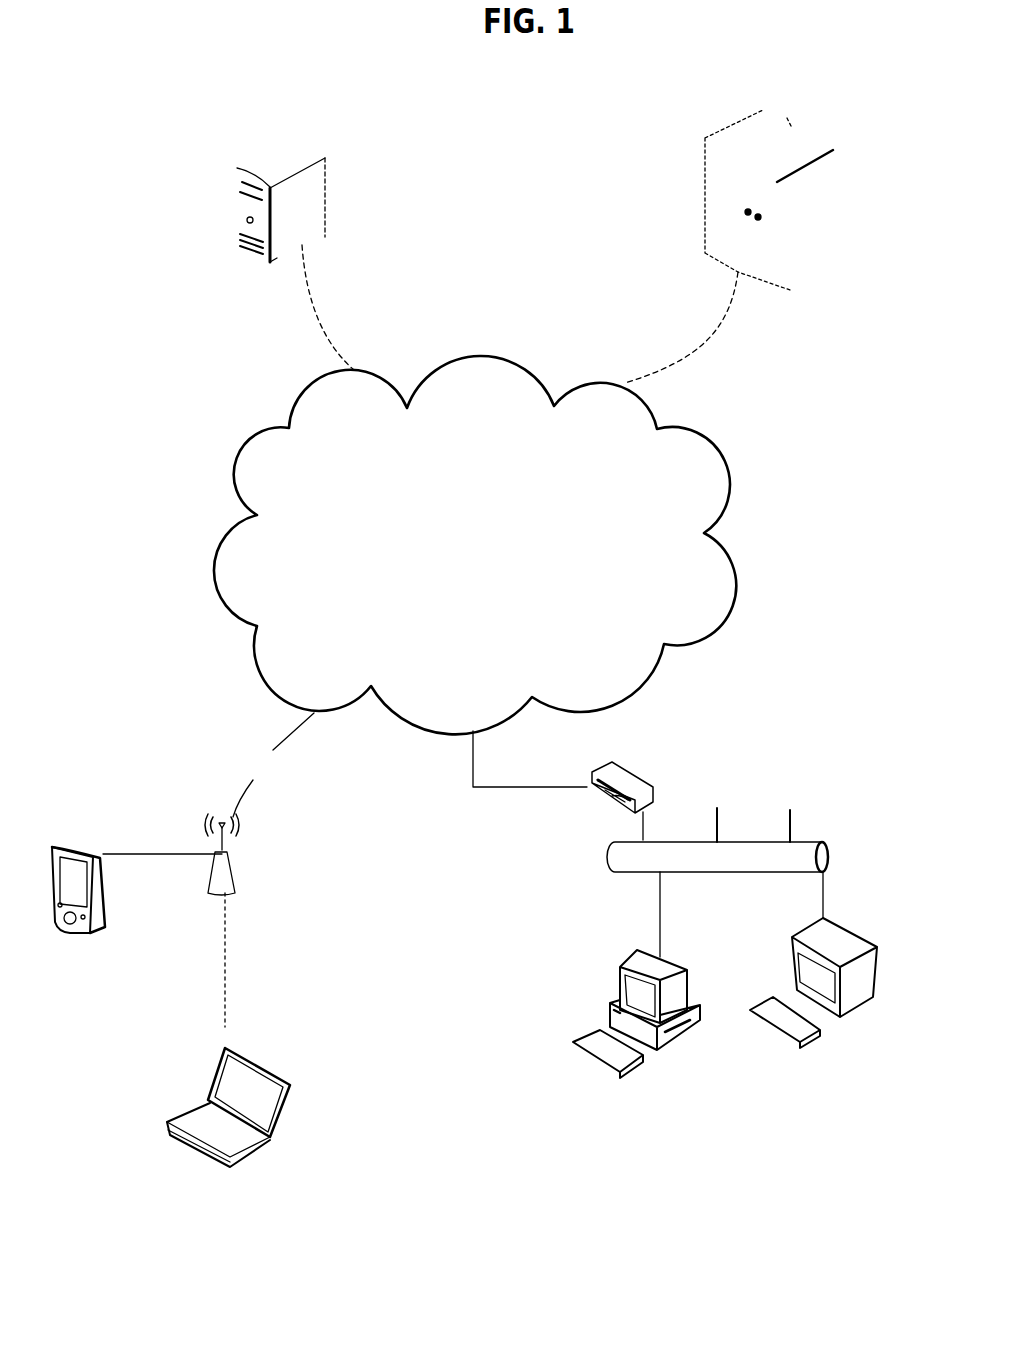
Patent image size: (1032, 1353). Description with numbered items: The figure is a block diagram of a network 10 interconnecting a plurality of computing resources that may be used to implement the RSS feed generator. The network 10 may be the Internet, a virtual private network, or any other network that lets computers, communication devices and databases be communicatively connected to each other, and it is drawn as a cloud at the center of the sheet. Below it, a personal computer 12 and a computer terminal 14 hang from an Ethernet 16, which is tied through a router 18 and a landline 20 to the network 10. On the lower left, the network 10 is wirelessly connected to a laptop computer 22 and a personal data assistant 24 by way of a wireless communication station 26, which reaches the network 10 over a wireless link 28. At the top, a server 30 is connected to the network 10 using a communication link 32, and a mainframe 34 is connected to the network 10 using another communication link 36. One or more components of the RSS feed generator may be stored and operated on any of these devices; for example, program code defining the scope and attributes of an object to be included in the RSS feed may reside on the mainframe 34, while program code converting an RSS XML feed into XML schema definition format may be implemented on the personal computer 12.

The network 10 is at (475, 545).
The personal computer 12 is at (627, 958).
The computer terminal 14 is at (857, 937).
The Ethernet 16 is at (717, 840).
The router 18 is at (653, 785).
The landline 20 is at (523, 788).
The laptop computer 22 is at (273, 1142).
The personal data assistant 24 is at (83, 850).
The wireless communication station 26 is at (233, 875).
The wireless link 28 is at (273, 765).
The server 30 is at (325, 195).
The communication link 32 is at (336, 307).
The mainframe 34 is at (830, 265).
The communication link 36 is at (681, 327).